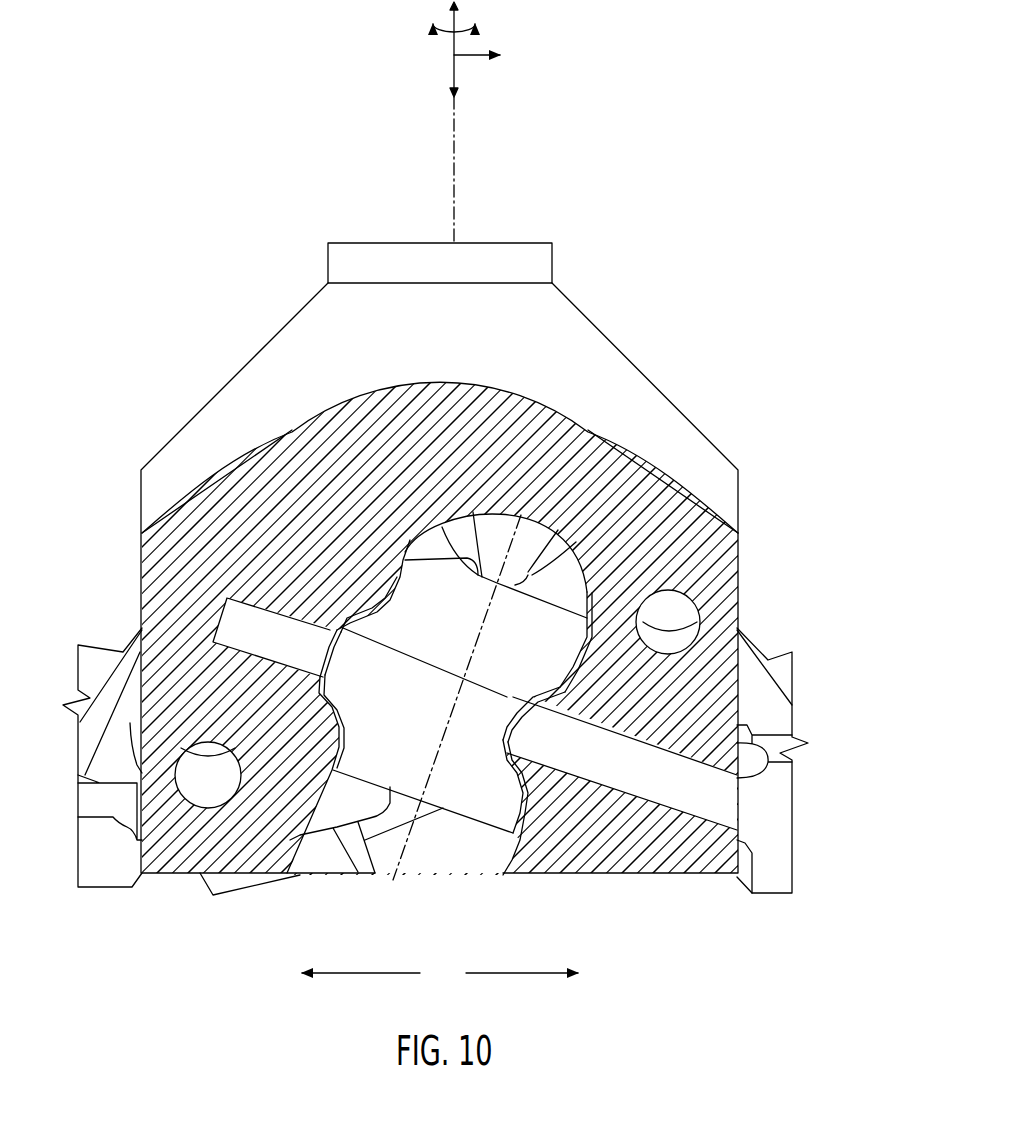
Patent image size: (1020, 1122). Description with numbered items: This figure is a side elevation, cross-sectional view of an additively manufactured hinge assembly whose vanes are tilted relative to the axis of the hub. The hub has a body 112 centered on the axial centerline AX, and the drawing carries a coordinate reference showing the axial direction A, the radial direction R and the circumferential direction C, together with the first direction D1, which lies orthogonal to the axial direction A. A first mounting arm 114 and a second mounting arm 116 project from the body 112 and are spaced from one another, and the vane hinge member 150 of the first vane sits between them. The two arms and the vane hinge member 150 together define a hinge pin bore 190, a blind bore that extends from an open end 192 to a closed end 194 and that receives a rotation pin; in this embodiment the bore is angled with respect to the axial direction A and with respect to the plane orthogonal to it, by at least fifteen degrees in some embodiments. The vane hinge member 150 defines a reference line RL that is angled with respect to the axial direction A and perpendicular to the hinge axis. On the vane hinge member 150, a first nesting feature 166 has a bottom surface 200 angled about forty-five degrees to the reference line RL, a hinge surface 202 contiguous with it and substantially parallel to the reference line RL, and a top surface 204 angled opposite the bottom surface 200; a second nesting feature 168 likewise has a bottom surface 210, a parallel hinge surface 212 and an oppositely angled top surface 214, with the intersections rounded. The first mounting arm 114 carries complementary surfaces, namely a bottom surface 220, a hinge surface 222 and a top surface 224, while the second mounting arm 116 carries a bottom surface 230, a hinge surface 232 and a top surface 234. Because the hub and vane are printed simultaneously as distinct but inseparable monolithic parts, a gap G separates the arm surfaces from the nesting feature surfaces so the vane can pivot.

The body 112 is at (435, 597).
The first mounting arm 114 is at (205, 845).
The second mounting arm 116 is at (600, 847).
The vane hinge member 150 is at (467, 798).
The first nesting feature 166 is at (405, 552).
The second nesting feature 168 is at (602, 666).
The hinge pin bore 190 is at (680, 797).
The open end 192 is at (744, 800).
The closed end 194 is at (215, 613).
The bottom surface 200 is at (322, 722).
The hinge surface 202 is at (322, 663).
The top surface 204 is at (372, 613).
The bottom surface 210 is at (532, 771).
The hinge surface 212 is at (525, 728).
The top surface 214 is at (561, 694).
The bottom surface 220 is at (343, 707).
The hinge surface 222 is at (341, 665).
The top surface 224 is at (380, 630).
The bottom surface 230 is at (510, 778).
The hinge surface 232 is at (504, 712).
The top surface 234 is at (552, 680).
The gap G is at (345, 630).
The reference line RL is at (528, 515).
The axial centerline AX is at (450, 122).
The first direction D1 is at (440, 974).
The circumferential direction C is at (441, 30).
The radial direction R is at (486, 57).
The axial direction A is at (432, 84).